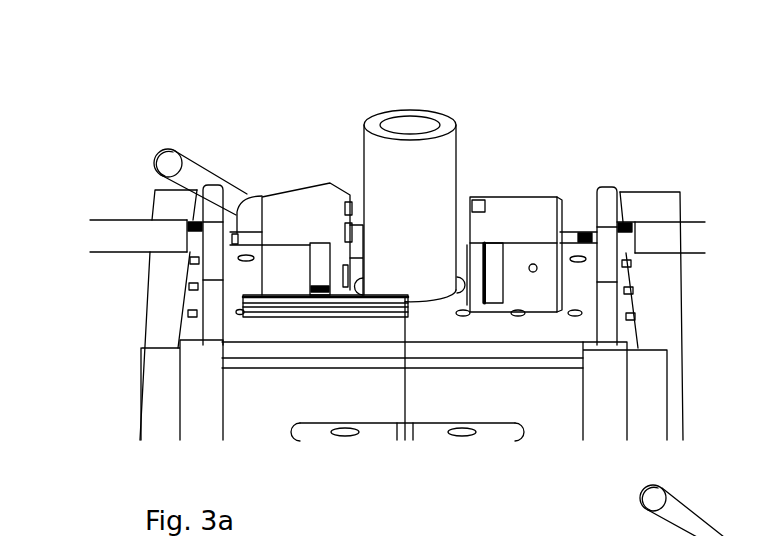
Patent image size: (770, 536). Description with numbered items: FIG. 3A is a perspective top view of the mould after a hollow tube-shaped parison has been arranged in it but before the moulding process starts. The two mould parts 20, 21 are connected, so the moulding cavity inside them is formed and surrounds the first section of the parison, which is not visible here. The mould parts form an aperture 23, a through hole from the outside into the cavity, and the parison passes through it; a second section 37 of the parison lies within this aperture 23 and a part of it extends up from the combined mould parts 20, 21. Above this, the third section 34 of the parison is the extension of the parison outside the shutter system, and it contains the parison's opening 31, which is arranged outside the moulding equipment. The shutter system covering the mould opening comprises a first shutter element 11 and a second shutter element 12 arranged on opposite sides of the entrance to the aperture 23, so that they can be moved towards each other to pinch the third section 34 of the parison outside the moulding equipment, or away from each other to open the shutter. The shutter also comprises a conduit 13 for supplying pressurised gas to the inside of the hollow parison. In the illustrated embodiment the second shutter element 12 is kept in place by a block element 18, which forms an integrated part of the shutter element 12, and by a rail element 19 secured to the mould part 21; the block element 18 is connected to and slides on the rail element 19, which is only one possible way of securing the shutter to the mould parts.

The first shutter element 11 is at (518, 222).
The second shutter element 12 is at (290, 222).
The conduit 13 is at (187, 172).
The block element 18 is at (318, 273).
The rail element 19 is at (368, 300).
The mould part 20 is at (643, 335).
The mould part 21 is at (172, 268).
The aperture 23 is at (430, 300).
The opening 31 is at (403, 125).
The third section 34 is at (398, 188).
The second section 37 is at (435, 243).